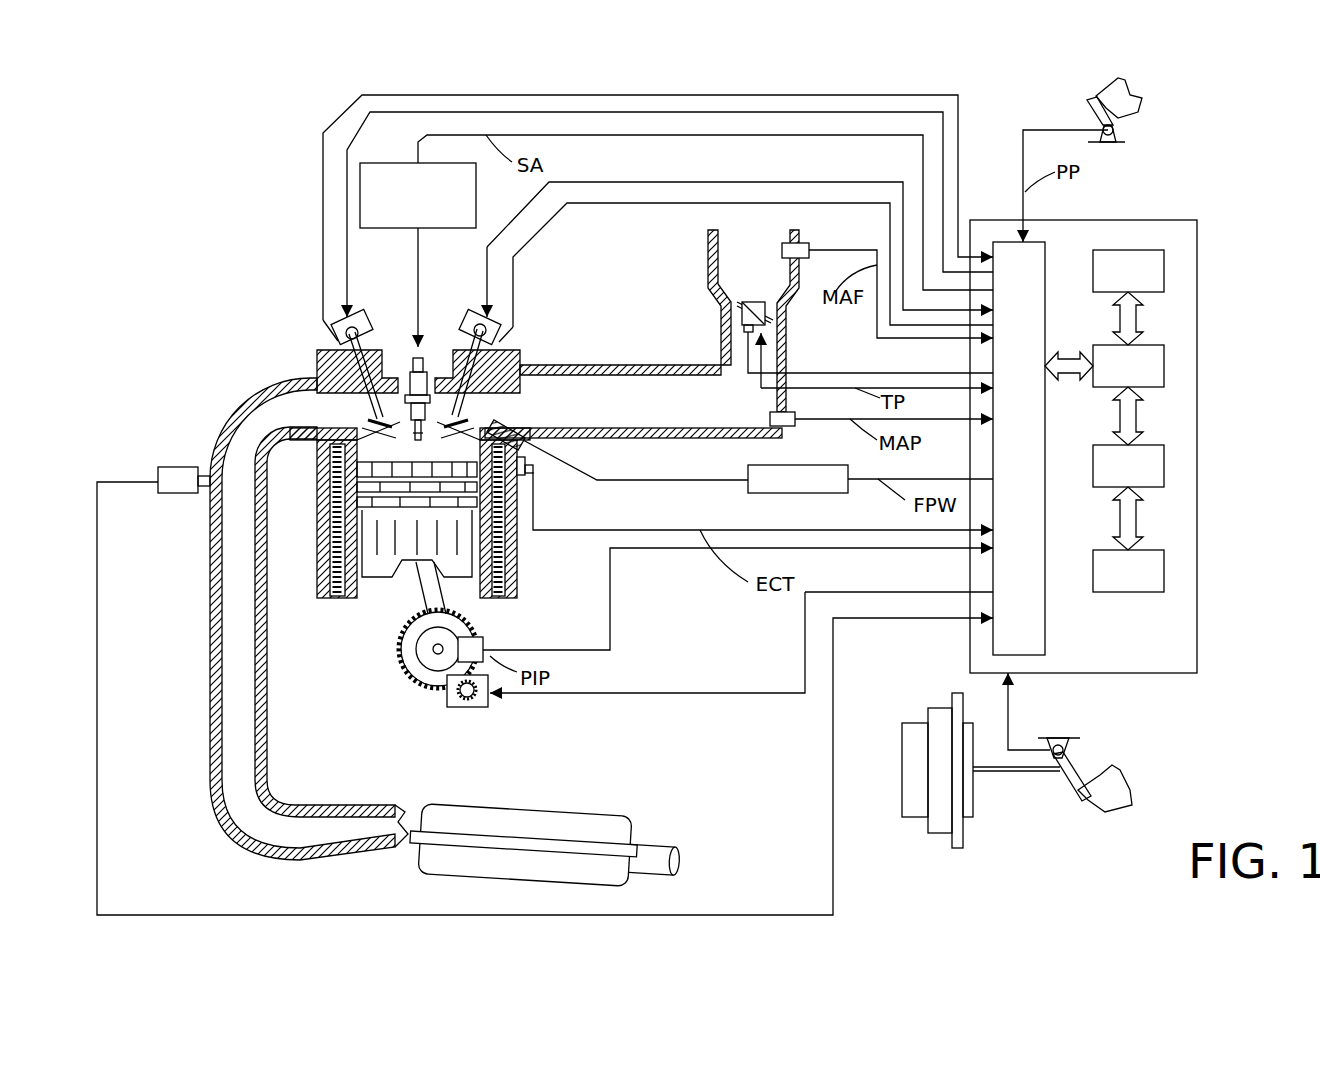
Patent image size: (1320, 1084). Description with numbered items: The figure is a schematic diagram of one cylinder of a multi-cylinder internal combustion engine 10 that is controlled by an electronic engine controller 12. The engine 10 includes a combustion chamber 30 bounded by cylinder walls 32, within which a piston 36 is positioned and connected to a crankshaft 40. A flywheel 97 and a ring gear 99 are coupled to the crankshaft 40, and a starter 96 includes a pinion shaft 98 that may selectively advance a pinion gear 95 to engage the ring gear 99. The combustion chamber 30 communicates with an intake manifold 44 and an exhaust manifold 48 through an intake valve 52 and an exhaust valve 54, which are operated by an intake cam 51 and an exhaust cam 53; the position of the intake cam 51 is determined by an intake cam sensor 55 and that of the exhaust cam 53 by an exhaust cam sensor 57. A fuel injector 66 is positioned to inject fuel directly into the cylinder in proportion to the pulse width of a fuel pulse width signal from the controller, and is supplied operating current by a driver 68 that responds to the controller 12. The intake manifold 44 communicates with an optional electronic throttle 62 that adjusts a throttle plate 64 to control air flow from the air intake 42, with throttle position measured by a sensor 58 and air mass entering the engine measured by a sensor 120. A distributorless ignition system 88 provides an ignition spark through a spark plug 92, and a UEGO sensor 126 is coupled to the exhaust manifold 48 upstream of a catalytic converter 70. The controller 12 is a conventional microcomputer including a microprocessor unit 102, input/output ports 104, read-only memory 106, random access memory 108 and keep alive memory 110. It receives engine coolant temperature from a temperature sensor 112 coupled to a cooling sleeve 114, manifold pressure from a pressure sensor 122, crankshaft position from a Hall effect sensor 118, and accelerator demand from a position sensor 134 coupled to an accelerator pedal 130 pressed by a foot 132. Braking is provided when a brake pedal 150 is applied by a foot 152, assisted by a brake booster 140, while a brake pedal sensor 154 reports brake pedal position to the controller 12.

The internal combustion engine 10 is at (248, 300).
The electronic engine controller 12 is at (1185, 222).
The combustion chamber 30 is at (338, 548).
The cylinder walls 32 is at (355, 600).
The piston 36 is at (400, 592).
The crankshaft 40 is at (420, 682).
The air intake 42 is at (740, 276).
The intake manifold 44 is at (675, 416).
The exhaust manifold 48 is at (272, 419).
The intake cam 51 is at (478, 324).
The intake valve 52 is at (465, 422).
The exhaust cam 53 is at (354, 326).
The exhaust valve 54 is at (332, 392).
The intake cam sensor 55 is at (495, 337).
The exhaust cam sensor 57 is at (336, 335).
The throttle position sensor 58 is at (724, 340).
The electronic throttle 62 is at (767, 312).
The throttle plate 64 is at (738, 306).
The fuel injector 66 is at (505, 437).
The driver 68 is at (768, 494).
The catalytic converter 70 is at (430, 805).
The distributorless ignition system 88 is at (376, 163).
The spark plug 92 is at (421, 350).
The pinion gear 95 is at (470, 710).
The starter 96 is at (478, 707).
The flywheel 97 is at (410, 650).
The pinion shaft 98 is at (460, 705).
The ring gear 99 is at (432, 690).
The microprocessor unit 102 is at (1165, 370).
The input/output ports 104 is at (1050, 250).
The read-only memory 106 is at (1165, 268).
The random access memory 108 is at (1165, 470).
The keep alive memory 110 is at (1165, 575).
The temperature sensor 112 is at (528, 476).
The cooling sleeve 114 is at (512, 552).
The Hall effect sensor 118 is at (486, 640).
The air mass sensor 120 is at (803, 243).
The pressure sensor 122 is at (795, 426).
The Universal Exhaust Gas Oxygen (UEGO) sensor 126 is at (158, 478).
The accelerator pedal 130 is at (1090, 104).
The foot 132 is at (1140, 92).
The position sensor 134 is at (1125, 130).
The brake booster 140 is at (898, 818).
The brake pedal 150 is at (1085, 795).
The foot 152 is at (1118, 768).
The brake pedal sensor 154 is at (1050, 750).